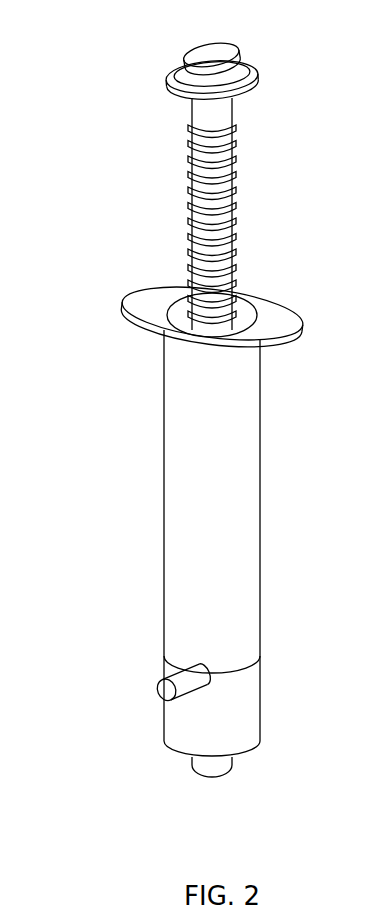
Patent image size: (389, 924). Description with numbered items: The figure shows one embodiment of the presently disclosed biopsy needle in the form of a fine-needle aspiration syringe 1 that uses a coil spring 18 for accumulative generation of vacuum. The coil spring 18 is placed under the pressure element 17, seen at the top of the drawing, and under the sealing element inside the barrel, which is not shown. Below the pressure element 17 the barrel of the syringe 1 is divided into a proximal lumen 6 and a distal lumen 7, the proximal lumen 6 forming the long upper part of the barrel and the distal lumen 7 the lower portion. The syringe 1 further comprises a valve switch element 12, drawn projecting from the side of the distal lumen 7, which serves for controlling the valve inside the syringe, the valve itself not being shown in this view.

The fine-needle aspiration syringe 1 is at (88, 420).
The proximal lumen 6 is at (210, 495).
The distal lumen 7 is at (213, 730).
The valve switch element 12 is at (163, 689).
The pressure element 17 is at (212, 63).
The coil spring 18 is at (194, 228).